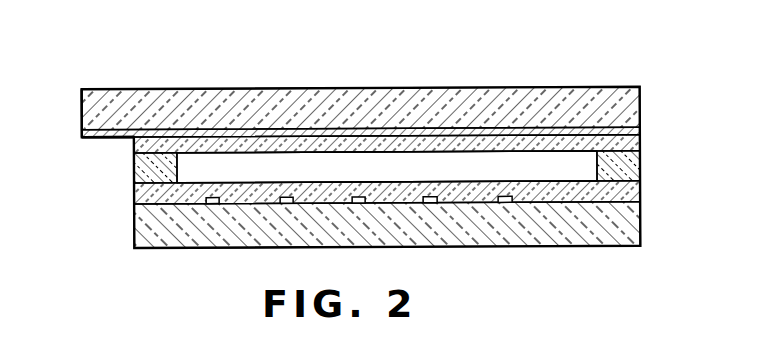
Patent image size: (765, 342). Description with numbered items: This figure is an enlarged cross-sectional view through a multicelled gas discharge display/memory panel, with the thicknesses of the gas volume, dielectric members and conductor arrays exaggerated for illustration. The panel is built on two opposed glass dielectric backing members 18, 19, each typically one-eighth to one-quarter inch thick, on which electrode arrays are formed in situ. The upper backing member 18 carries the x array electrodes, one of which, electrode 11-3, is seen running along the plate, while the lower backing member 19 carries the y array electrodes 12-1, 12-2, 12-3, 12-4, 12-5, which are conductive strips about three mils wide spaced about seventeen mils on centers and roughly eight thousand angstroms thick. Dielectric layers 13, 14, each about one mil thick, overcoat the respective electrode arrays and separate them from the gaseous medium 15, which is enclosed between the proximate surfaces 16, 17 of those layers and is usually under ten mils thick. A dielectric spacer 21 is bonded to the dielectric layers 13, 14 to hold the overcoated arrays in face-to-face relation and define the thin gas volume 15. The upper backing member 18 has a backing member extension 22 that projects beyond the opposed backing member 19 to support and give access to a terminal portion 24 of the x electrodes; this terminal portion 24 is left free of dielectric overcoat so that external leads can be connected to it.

The x array electrode 11-3 is at (526, 130).
The y array electrode 12-1 is at (212, 203).
The y array electrode 12-2 is at (286, 203).
The y array electrode 12-3 is at (358, 203).
The y array electrode 12-4 is at (430, 203).
The y array electrode 12-5 is at (505, 203).
The dielectric layer 13 is at (632, 140).
The dielectric layer 14 is at (637, 192).
The gaseous medium 15 is at (387, 167).
The proximate surface of dielectric layer 13 16 is at (240, 152).
The proximate surface of dielectric layer 14 17 is at (322, 182).
The dielectric backing member 18 is at (268, 97).
The dielectric backing member 19 is at (134, 233).
The dielectric spacer 21 is at (134, 178).
The backing member extension 22 is at (82, 103).
The terminal portion 24 is at (110, 137).